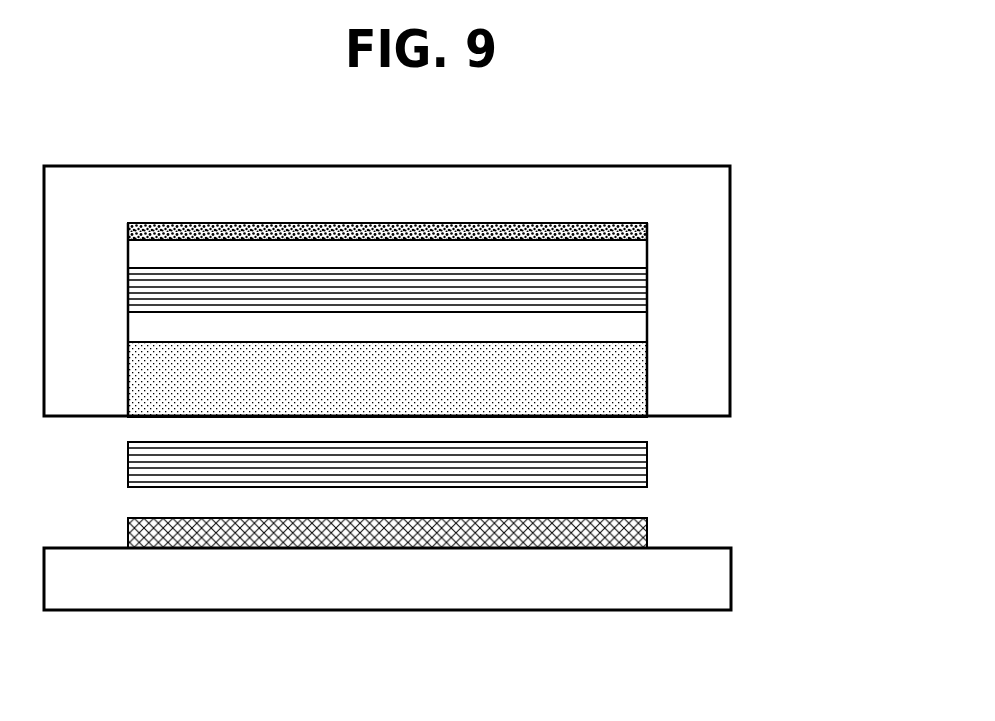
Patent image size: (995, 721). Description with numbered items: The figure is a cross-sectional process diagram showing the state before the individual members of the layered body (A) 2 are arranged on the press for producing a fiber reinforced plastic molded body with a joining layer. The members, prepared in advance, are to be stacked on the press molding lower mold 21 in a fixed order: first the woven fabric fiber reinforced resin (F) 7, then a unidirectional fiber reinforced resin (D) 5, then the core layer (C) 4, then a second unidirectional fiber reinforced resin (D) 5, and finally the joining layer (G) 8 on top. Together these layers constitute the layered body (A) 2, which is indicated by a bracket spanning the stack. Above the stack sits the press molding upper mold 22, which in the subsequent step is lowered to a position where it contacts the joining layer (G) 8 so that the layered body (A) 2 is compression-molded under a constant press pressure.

The layered body (A) 2 is at (501, 374).
The core layer (C) 4 is at (620, 376).
The unidirectional fiber reinforced resin (D) 5 is at (625, 277).
The woven fabric fiber reinforced resin (F) 7 is at (600, 535).
The joining layer (G) 8 is at (632, 232).
The press molding lower mold 21 is at (633, 587).
The press molding upper mold 22 is at (663, 176).